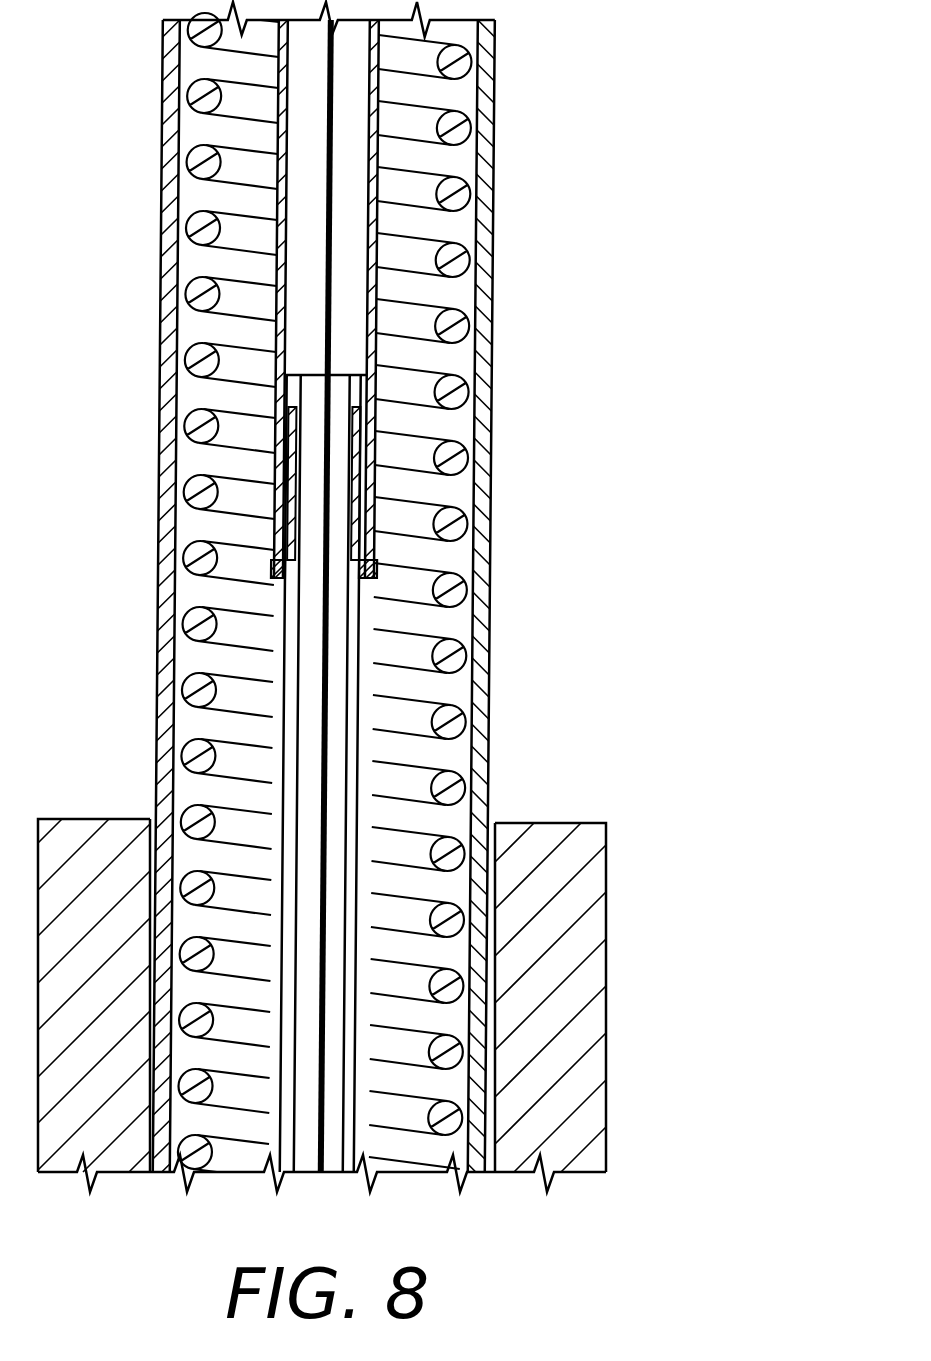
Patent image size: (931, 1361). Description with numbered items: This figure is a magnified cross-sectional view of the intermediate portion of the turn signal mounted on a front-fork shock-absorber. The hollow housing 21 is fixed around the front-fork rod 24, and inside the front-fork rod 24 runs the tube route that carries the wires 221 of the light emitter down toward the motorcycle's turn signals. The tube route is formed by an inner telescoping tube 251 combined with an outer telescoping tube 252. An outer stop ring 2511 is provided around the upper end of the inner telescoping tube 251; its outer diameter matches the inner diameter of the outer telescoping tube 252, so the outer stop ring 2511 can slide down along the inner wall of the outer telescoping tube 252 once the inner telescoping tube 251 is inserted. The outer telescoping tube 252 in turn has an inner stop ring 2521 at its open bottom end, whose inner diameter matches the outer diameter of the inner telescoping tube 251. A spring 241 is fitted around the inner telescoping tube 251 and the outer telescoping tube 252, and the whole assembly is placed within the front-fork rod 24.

The hollow housing 21 is at (562, 924).
The front-fork rod 24 is at (484, 428).
The spring 241 is at (448, 722).
The inner telescoping tube 251 is at (361, 605).
The outer stop ring 2511 is at (362, 392).
The outer telescoping tube 252 is at (380, 162).
The inner stop ring 2521 is at (372, 565).
The wires 221 is at (333, 110).